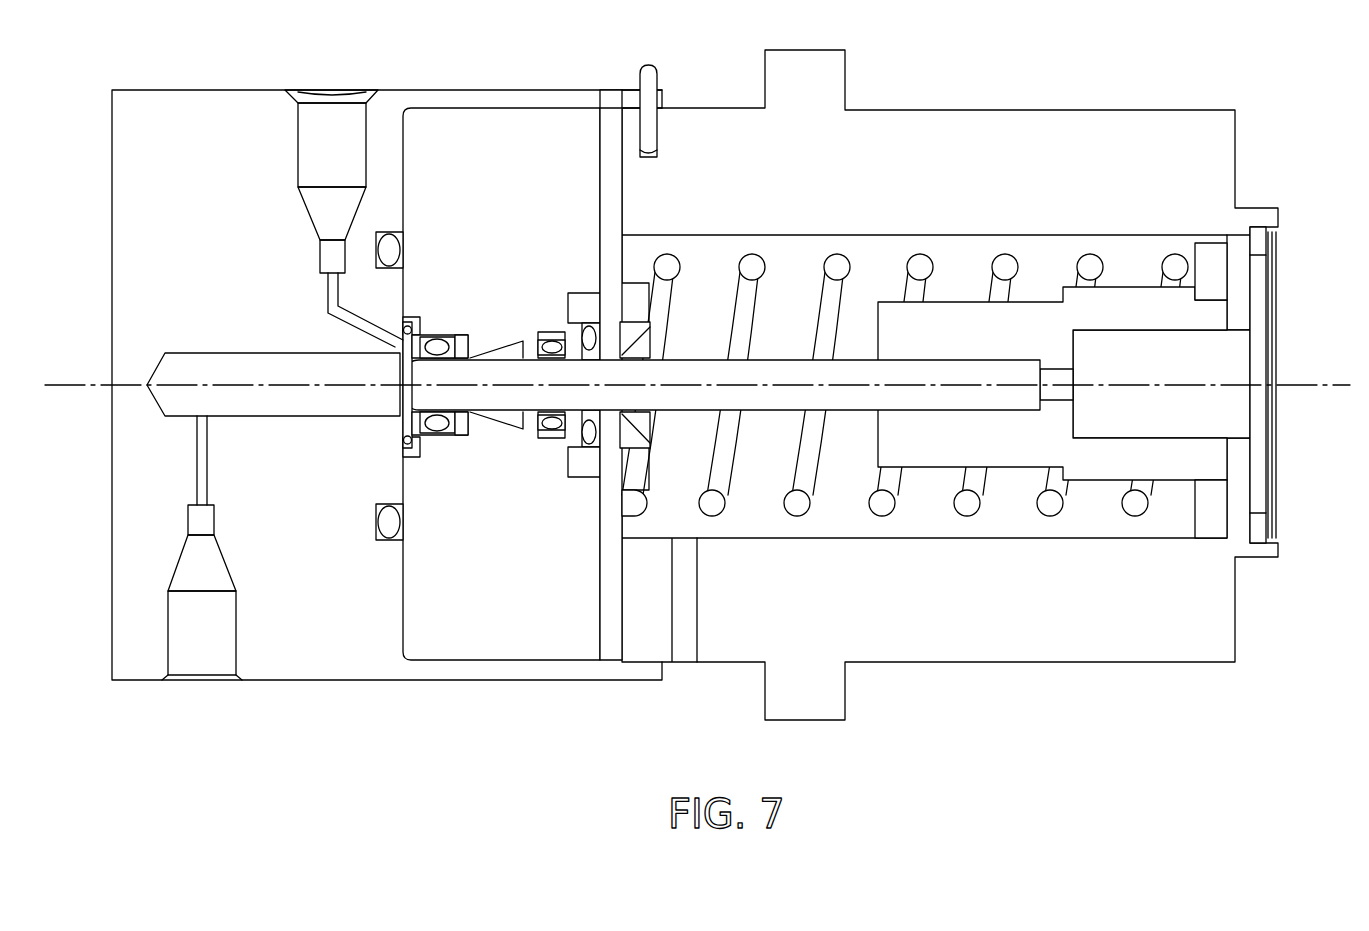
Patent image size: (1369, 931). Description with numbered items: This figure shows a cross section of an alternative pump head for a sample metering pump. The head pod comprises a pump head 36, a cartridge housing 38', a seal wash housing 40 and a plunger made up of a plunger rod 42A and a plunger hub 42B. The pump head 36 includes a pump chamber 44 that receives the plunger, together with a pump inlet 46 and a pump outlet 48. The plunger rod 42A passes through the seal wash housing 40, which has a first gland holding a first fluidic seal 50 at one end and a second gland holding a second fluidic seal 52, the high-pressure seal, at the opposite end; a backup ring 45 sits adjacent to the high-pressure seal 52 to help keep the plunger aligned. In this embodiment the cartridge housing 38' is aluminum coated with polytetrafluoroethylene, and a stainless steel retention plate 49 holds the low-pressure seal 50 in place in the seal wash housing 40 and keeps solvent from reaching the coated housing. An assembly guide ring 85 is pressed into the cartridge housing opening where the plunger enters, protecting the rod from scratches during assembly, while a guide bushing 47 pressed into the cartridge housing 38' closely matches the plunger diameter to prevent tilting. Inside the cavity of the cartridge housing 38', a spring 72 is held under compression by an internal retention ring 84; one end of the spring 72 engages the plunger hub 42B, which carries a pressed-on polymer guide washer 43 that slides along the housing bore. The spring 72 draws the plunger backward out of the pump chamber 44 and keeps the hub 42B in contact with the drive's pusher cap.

The pump head 36 is at (384, 680).
The cartridge housing 38' is at (950, 385).
The seal wash housing 40 is at (527, 662).
The plunger rod 42A is at (510, 412).
The plunger hub 42B is at (1242, 530).
The guide washer 43 is at (1208, 252).
The pump chamber 44 is at (252, 366).
The backup ring 45 is at (466, 342).
The pump inlet 46 is at (200, 694).
The guide bushing 47 is at (606, 440).
The pump outlet 48 is at (333, 74).
The retention plate 49 is at (612, 660).
The first fluidic seal 50 is at (576, 332).
The second fluidic seal 52 is at (446, 438).
The spring 72 is at (752, 312).
The internal retention ring 84 is at (1266, 274).
The assembly guide ring 85 is at (650, 346).